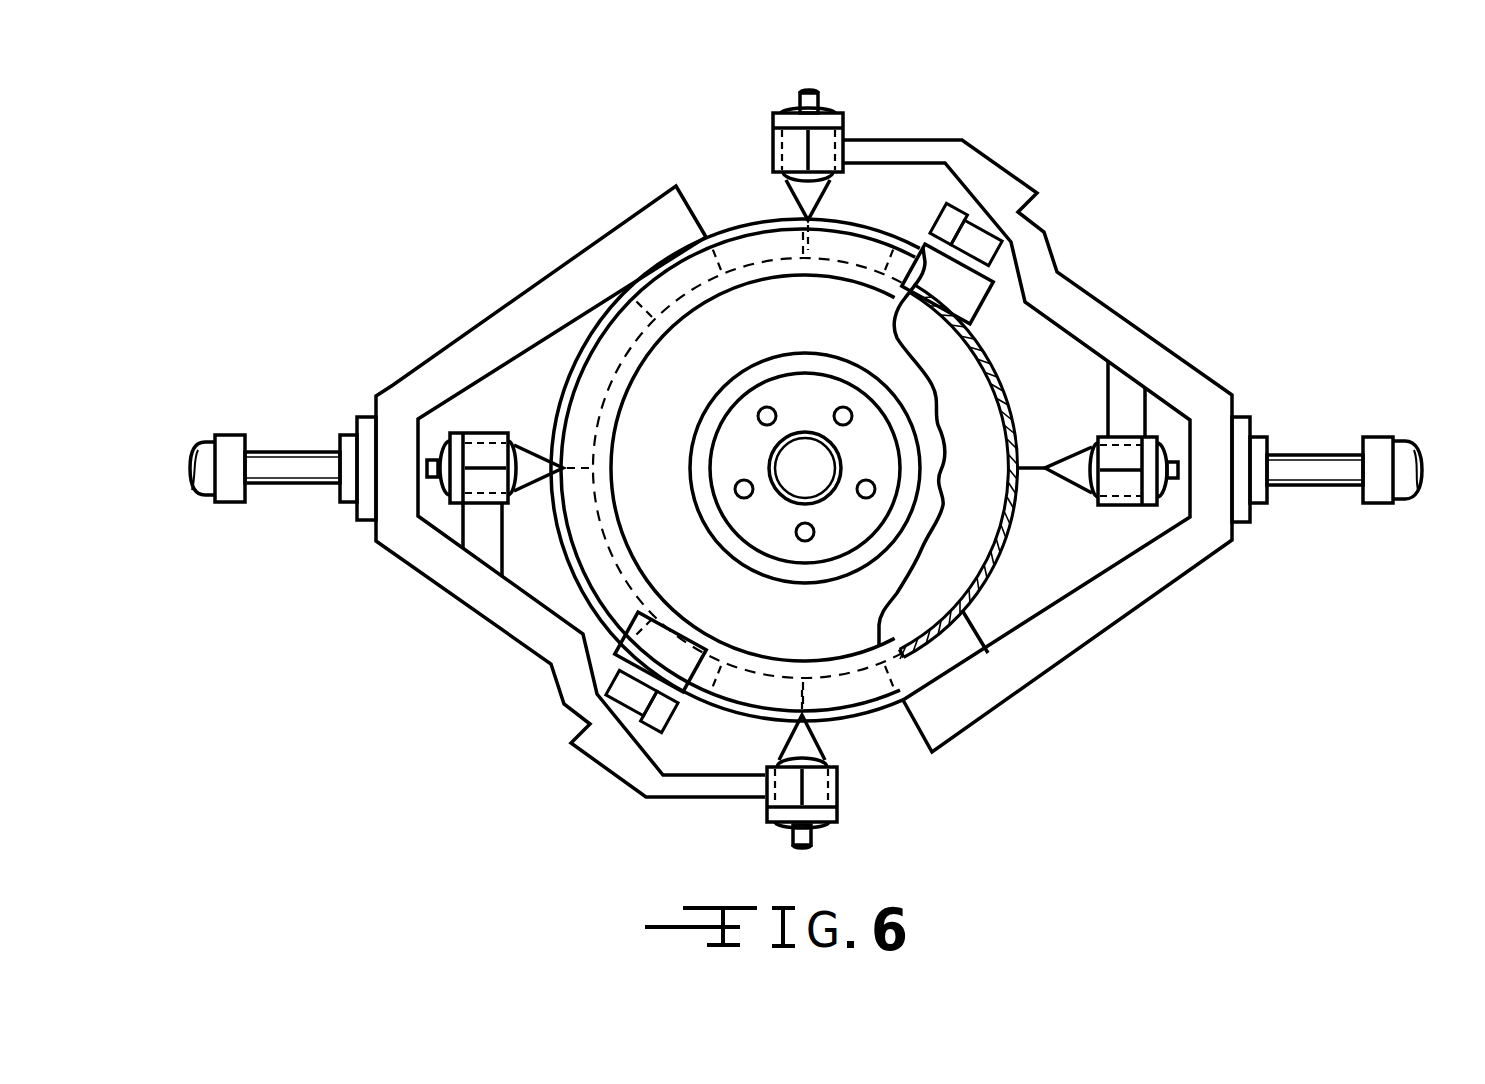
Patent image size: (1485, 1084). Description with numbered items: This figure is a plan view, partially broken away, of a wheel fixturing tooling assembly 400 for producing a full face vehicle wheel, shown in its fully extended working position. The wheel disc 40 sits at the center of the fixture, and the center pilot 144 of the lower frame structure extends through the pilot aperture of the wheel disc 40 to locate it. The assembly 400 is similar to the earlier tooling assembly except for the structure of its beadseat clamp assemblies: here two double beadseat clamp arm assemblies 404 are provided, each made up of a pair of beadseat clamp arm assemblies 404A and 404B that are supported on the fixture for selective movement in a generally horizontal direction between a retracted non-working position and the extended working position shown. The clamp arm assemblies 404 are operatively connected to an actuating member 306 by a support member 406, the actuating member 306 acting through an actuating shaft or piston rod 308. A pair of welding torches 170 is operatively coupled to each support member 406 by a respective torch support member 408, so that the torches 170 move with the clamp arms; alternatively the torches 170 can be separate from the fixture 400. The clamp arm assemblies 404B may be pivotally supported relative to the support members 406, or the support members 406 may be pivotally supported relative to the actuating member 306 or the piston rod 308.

The wheel fixturing tooling assembly 400 is at (1228, 162).
The wheel disc 40 is at (1003, 384).
The center pilot 144 is at (812, 477).
The welding torches 170 is at (773, 160).
The actuating member 306 is at (223, 430).
The actuating shaft or piston rod 308 is at (325, 462).
The double beadseat clamp arm assemblies 404 is at (402, 369).
The beadseat clamp arm assembly 404A is at (985, 319).
The beadseat clamp arm assembly 404B is at (624, 300).
The support member 406 is at (427, 555).
The torch support member 408 is at (912, 150).